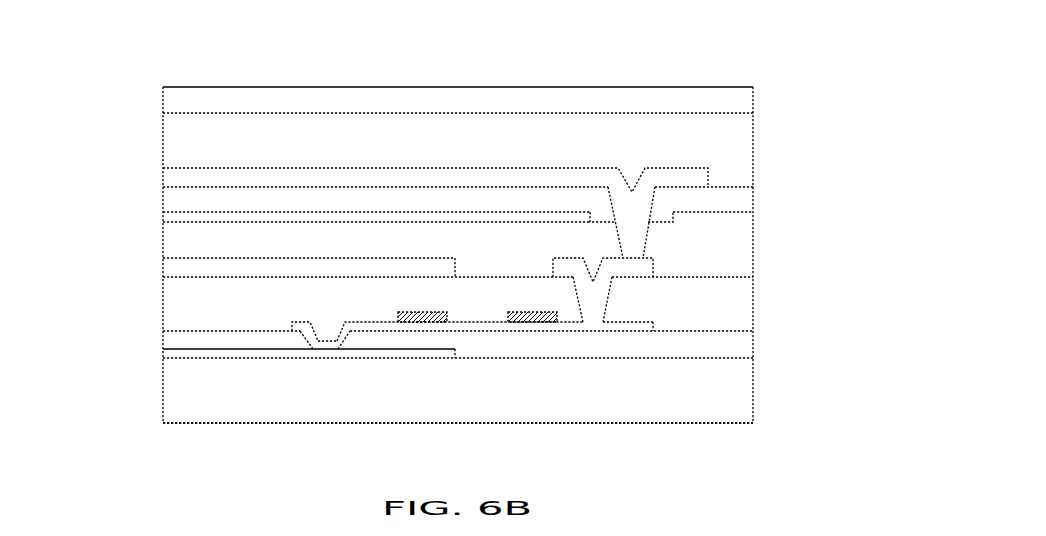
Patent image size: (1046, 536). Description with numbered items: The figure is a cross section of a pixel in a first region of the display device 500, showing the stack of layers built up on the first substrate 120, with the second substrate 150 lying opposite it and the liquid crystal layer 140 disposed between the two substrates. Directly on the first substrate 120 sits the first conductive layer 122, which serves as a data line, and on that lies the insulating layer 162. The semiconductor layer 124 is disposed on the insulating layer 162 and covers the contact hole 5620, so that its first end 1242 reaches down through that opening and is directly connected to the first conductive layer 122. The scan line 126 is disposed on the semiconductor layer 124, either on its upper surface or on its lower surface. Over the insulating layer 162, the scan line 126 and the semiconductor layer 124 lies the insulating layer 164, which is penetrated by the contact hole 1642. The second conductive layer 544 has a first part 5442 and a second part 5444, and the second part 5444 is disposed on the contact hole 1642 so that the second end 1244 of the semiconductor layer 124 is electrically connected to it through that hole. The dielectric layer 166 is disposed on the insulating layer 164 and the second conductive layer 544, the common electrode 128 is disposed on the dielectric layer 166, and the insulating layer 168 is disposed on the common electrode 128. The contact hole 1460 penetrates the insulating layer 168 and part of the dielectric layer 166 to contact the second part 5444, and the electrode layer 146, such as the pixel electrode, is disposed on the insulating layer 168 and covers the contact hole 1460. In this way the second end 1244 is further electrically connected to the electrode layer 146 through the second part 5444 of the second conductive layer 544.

The display device 500 is at (84, 35).
The second substrate 150 is at (173, 103).
The liquid crystal layer 140 is at (163, 145).
The electrode layer 146 is at (173, 176).
The contact hole 1460 is at (657, 200).
The insulating layer 168 is at (173, 203).
The common electrode 128 is at (171, 219).
The dielectric layer 166 is at (180, 250).
The second conductive layer 544 is at (408, 148).
The first part 5442 is at (435, 267).
The second part 5444 is at (614, 268).
The insulating layer 164 is at (174, 312).
The contact hole 1642 is at (618, 302).
The semiconductor layer 124 is at (645, 323).
The first end 1242 is at (328, 358).
The second end 1244 is at (653, 325).
The insulating layer 162 is at (174, 341).
The contact hole 5620 is at (328, 331).
The scan line 126 is at (445, 318).
The first conductive layer 122 is at (171, 356).
The first substrate 120 is at (182, 386).